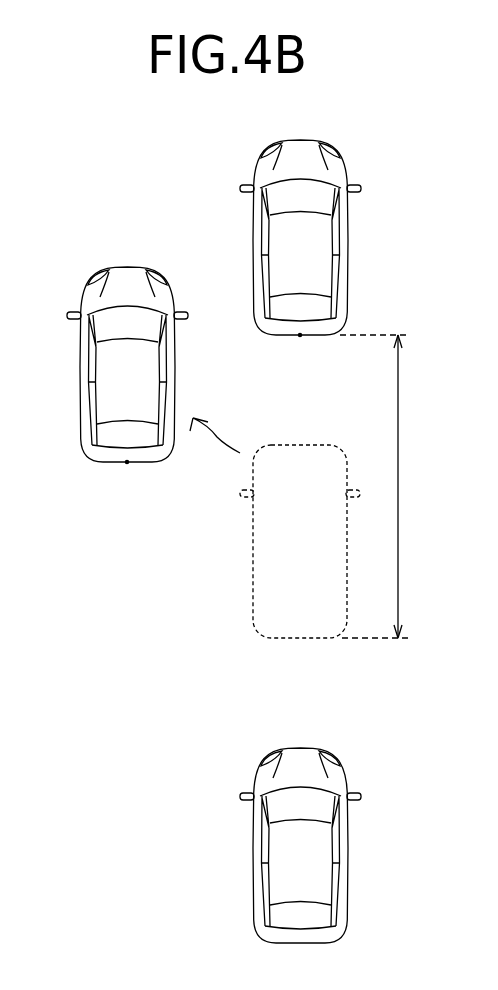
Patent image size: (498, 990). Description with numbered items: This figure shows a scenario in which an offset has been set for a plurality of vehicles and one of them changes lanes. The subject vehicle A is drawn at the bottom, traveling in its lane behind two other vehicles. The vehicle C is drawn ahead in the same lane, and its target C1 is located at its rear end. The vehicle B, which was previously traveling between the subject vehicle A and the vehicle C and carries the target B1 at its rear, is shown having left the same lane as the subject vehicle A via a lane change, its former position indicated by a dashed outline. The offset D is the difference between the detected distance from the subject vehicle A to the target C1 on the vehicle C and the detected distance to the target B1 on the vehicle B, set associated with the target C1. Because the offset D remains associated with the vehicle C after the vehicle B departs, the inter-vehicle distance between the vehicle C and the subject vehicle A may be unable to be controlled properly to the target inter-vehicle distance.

The subject vehicle A is at (348, 826).
The vehicle B is at (80, 352).
The target B1 is at (127, 462).
The vehicle C is at (347, 214).
The target C1 is at (300, 336).
The offset D is at (379, 486).